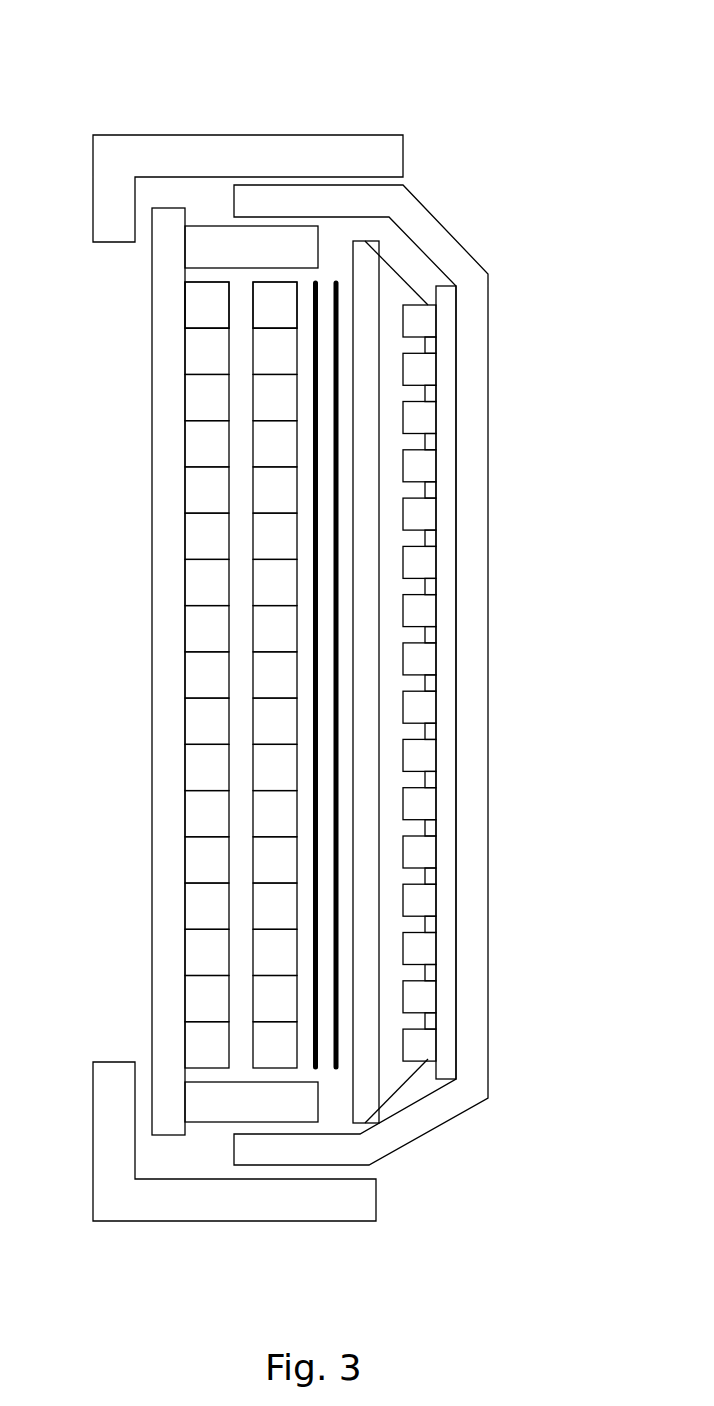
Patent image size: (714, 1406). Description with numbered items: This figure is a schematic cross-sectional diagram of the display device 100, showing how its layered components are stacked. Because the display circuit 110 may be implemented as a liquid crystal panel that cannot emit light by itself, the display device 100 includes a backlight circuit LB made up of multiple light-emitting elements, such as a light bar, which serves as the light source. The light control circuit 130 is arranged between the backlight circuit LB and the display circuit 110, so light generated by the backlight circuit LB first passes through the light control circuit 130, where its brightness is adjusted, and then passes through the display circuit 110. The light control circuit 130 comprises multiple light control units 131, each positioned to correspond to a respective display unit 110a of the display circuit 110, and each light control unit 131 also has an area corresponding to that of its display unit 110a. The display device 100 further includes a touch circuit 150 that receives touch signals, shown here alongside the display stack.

The display device 100 is at (620, 45).
The display circuit 110 is at (195, 493).
The display unit 110a is at (197, 311).
The light control circuit 130 is at (265, 584).
The light control unit 131 is at (265, 353).
The touch circuit 150 is at (158, 829).
The backlight circuit LB is at (428, 658).